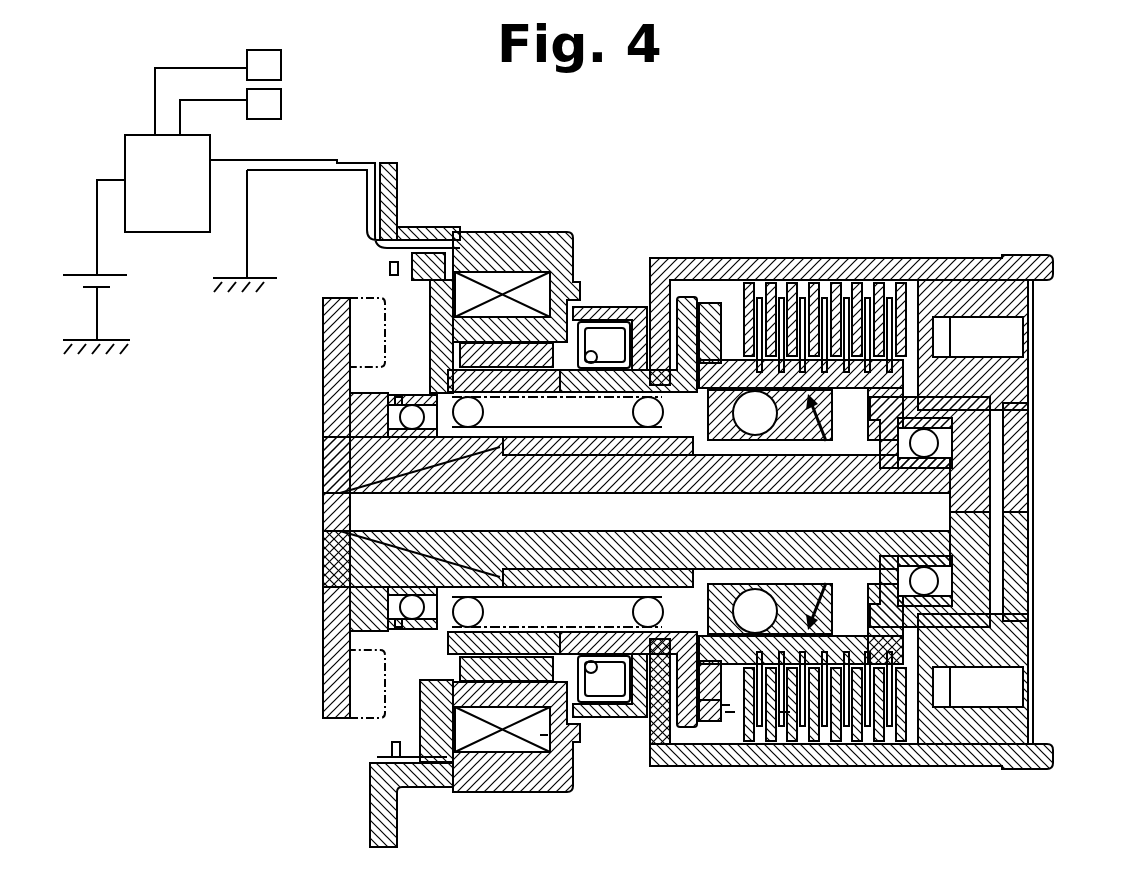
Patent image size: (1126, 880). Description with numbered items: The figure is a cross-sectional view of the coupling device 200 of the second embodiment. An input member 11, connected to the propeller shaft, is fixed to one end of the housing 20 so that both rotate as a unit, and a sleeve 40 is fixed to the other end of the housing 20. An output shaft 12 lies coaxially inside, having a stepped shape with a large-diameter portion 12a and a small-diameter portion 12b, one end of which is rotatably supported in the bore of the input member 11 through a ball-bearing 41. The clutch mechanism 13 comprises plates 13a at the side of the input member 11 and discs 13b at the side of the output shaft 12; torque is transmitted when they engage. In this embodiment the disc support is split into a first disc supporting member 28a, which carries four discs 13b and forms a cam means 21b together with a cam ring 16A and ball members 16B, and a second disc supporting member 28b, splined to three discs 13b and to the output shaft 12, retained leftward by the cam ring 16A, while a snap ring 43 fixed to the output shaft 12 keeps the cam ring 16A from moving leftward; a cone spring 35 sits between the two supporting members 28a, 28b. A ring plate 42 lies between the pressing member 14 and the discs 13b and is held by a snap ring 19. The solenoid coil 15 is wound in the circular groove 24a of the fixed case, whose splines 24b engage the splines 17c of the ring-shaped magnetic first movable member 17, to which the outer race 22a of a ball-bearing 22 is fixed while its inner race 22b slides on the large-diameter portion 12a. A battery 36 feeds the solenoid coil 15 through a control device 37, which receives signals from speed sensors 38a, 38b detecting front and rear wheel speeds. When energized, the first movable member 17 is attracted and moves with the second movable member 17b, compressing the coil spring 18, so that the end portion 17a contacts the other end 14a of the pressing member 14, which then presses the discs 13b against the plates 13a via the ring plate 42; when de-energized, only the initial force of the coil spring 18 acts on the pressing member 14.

The input member 11 is at (1032, 377).
The output shaft 12 is at (348, 546).
The large-diameter portion 12a is at (385, 575).
The small-diameter portion 12b is at (838, 732).
The clutch mechanism 13 is at (898, 258).
The plates 13a is at (790, 310).
The discs 13b is at (810, 330).
The pressing member 14 is at (682, 317).
The other end of the pressing member 14a is at (590, 455).
The solenoid coil 15 is at (500, 277).
The cam ring 16A is at (725, 710).
The ball members 16B is at (782, 713).
The first movable member 17 is at (435, 307).
The end portion of the second movable member 17a is at (608, 457).
The second movable member 17b is at (500, 458).
The splines 17c is at (430, 255).
The coil spring 18 is at (563, 405).
The snap ring 19 is at (717, 357).
The housing 20 is at (947, 268).
The cam means 21b is at (757, 605).
The ball-bearing 22 is at (382, 413).
The outer race 22a is at (393, 392).
The inner race 22b is at (385, 426).
The circular groove 24a is at (542, 742).
The splines 24b is at (392, 752).
The first disc supporting member 28a is at (733, 370).
The second disc supporting member 28b is at (845, 455).
The cone spring 35 is at (828, 446).
The battery 36 is at (88, 273).
The control device 37 is at (132, 145).
The speed sensor 38a is at (275, 62).
The speed sensor 38b is at (275, 104).
The sleeve 40 is at (650, 732).
The ball-bearing 41 is at (952, 580).
The ring plate 42 is at (730, 715).
The snap ring 43 is at (712, 705).
The coupling device 200 is at (744, 160).